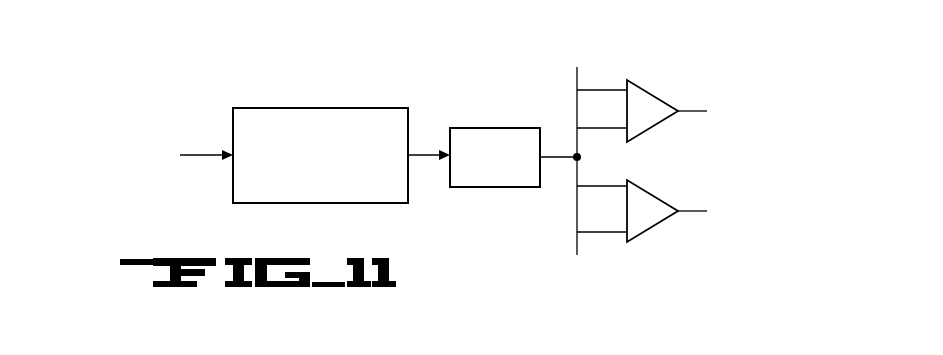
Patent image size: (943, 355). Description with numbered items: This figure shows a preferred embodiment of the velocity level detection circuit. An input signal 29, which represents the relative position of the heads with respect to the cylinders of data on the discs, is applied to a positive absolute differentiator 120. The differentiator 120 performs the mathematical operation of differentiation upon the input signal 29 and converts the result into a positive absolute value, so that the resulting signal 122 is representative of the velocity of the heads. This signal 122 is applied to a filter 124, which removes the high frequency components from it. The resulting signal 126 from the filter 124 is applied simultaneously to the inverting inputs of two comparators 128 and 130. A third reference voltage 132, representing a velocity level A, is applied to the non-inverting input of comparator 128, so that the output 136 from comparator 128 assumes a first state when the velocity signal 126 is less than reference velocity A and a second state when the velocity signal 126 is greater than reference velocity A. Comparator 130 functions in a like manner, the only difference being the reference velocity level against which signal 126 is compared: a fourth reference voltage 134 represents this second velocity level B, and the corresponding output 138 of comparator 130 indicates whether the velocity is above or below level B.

The input signal 29 is at (138, 133).
The positive absolute differentiator 120 is at (348, 108).
The signal 122 is at (422, 155).
The filter 124 is at (497, 128).
The resulting signal 126 is at (583, 173).
The comparator 128 is at (653, 92).
The comparator 130 is at (655, 228).
The third reference voltage 132 is at (531, 16).
The fourth reference voltage 134 is at (531, 267).
The output 136 is at (762, 84).
The velocity level B output 138 is at (753, 188).